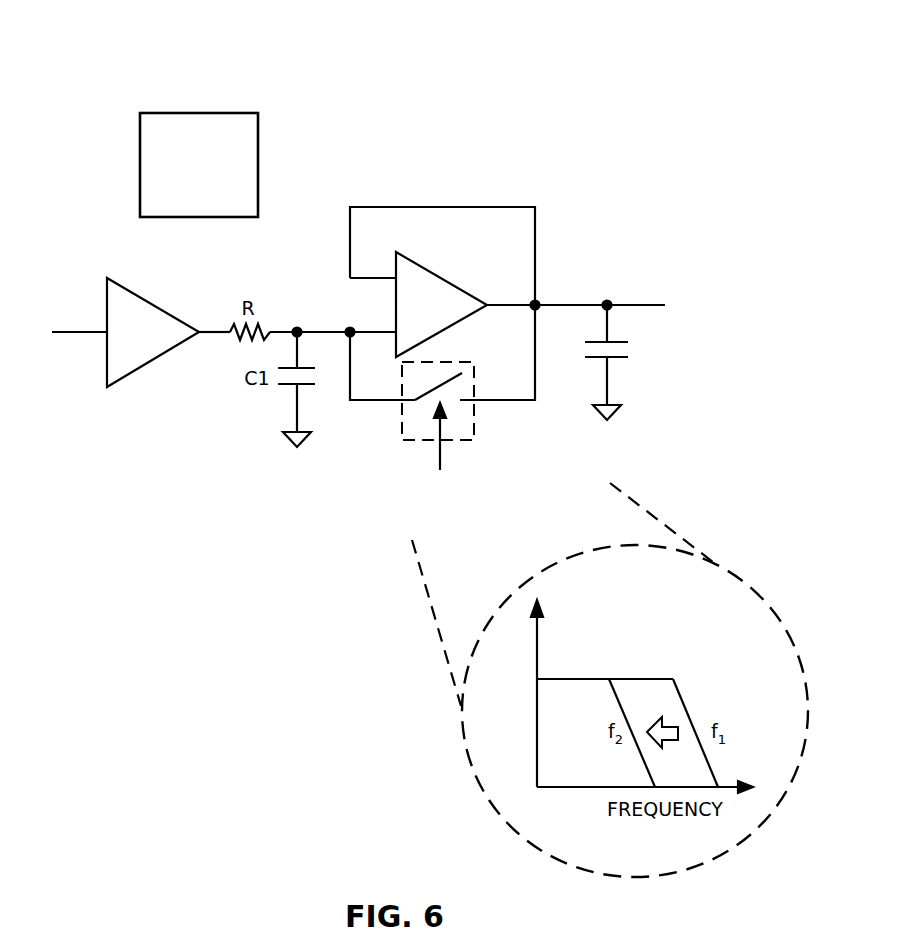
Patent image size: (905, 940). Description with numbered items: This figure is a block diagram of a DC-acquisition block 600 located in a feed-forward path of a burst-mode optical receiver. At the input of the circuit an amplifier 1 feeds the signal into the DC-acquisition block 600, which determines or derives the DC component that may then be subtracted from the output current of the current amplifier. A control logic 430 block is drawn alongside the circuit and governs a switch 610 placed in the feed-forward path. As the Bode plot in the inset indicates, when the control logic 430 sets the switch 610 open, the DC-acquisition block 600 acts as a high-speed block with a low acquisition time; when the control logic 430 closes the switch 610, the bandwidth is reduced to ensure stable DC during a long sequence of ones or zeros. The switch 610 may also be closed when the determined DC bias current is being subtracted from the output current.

The control logic 430 is at (184, 200).
The DC-acquisition block 600 is at (548, 290).
The switch 610 is at (477, 430).
The unity gain amplifier 1 is at (125, 332).